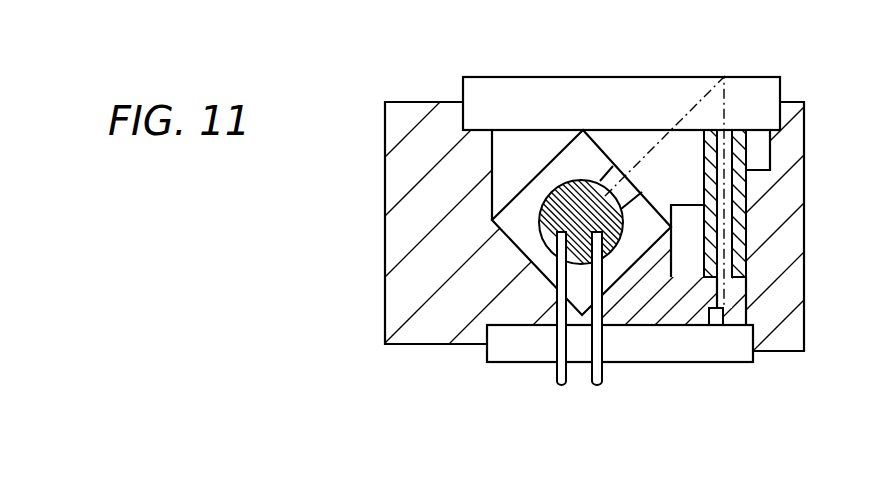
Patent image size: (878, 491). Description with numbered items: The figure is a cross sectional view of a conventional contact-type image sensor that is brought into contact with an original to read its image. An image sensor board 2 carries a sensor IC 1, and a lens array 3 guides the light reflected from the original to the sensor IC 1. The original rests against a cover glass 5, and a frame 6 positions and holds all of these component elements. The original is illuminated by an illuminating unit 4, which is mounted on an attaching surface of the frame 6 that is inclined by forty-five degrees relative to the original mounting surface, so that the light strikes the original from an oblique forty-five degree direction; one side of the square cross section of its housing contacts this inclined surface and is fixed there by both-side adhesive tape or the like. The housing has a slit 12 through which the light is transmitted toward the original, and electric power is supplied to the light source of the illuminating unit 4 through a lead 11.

The sensor IC 1 is at (723, 317).
The image sensor board 2 is at (725, 352).
The lens array 3 is at (738, 195).
The illuminating unit 4 is at (571, 158).
The cover glass 5 is at (493, 92).
The frame 6 is at (392, 214).
The lead 11 is at (597, 388).
The slit 12 is at (613, 176).